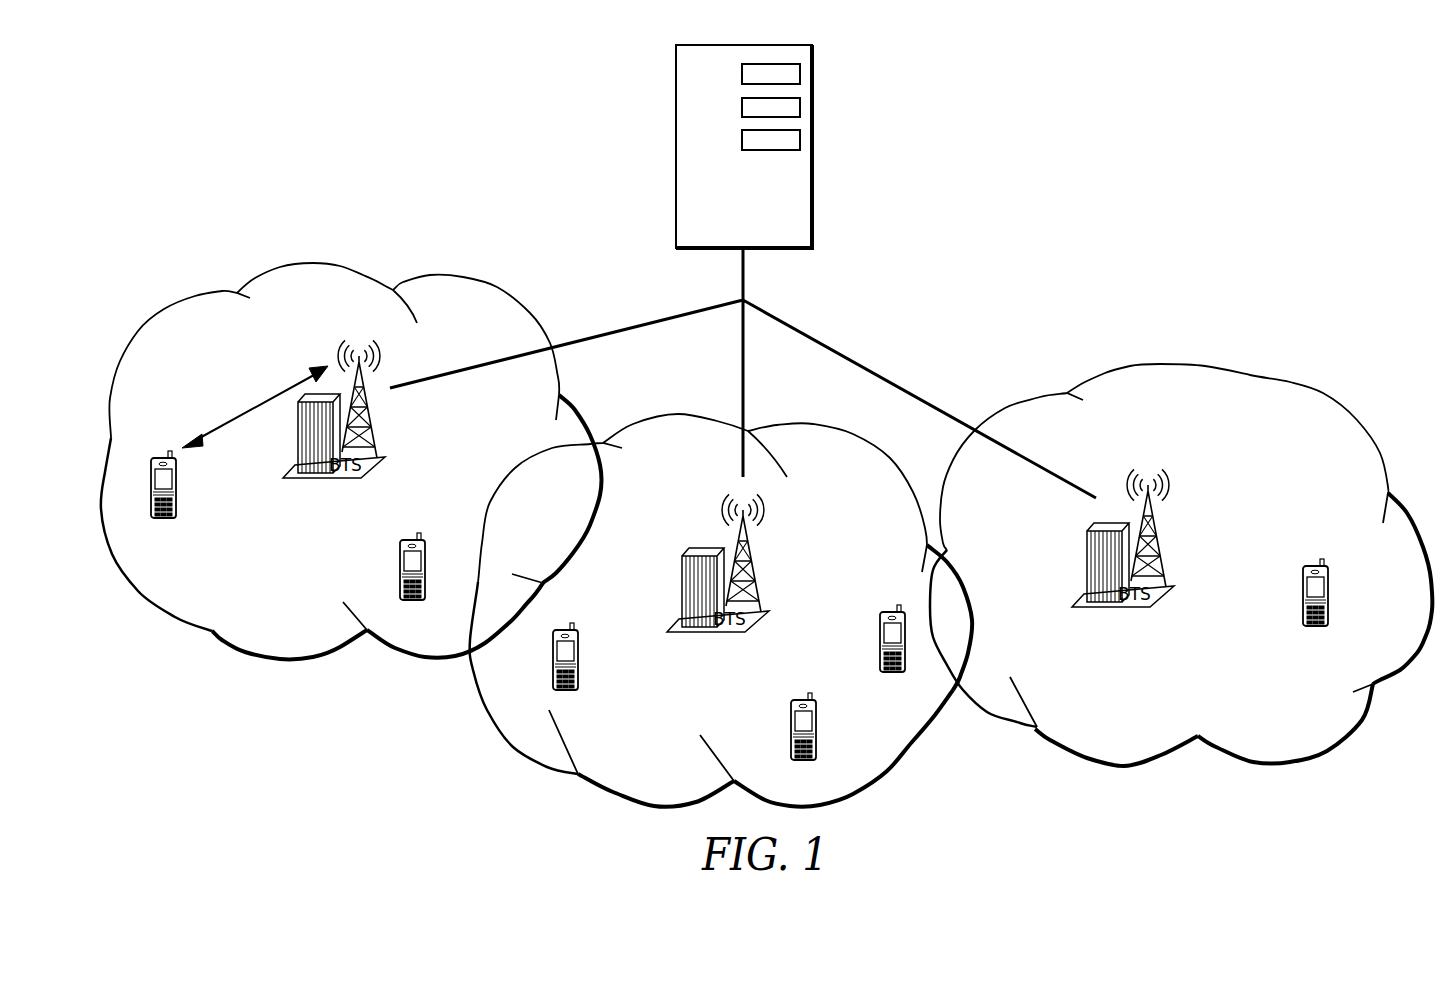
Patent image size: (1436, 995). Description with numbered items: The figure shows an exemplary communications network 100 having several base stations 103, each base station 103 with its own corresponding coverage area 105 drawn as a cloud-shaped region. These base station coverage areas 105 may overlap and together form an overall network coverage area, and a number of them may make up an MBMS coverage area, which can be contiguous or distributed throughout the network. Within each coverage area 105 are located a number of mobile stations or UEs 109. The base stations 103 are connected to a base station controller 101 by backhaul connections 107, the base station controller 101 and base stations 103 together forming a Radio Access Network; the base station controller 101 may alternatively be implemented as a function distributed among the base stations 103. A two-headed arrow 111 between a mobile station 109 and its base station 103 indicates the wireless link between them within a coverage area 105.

The communications network 100 is at (189, 110).
The base station controller 101 is at (790, 45).
The base station 103 is at (372, 418).
The coverage area 105 is at (293, 664).
The backhaul connections 107 is at (930, 395).
The mobile stations or UEs 109 is at (177, 488).
The wireless link between mobile station and BTS 111 is at (241, 412).